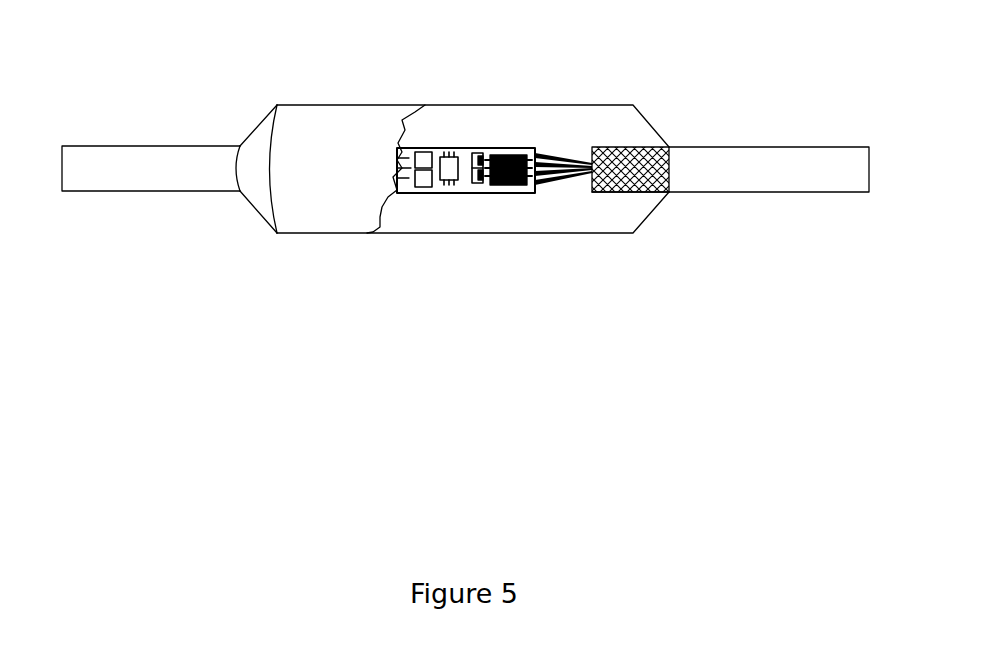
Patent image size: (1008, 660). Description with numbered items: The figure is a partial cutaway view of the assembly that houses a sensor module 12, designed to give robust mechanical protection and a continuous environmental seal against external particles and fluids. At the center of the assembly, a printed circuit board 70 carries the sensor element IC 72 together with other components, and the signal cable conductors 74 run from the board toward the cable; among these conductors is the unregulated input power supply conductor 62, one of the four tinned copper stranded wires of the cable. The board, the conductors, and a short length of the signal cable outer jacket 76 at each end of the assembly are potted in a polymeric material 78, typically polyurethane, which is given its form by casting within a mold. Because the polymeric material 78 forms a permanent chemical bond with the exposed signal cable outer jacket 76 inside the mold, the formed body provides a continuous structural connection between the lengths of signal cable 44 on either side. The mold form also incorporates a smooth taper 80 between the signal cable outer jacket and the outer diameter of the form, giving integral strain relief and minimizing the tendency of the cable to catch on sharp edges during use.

The sensor module 12 is at (465, 233).
The signal cable 44 is at (758, 206).
The unregulated input power supply conductor 62 is at (573, 257).
The printed circuit board 70 is at (466, 132).
The sensor element IC 72 is at (554, 113).
The signal cable conductors 74 is at (506, 218).
The signal cable outer jacket 76 is at (695, 132).
The polymeric material 78 is at (416, 182).
The smooth taper 80 is at (205, 157).